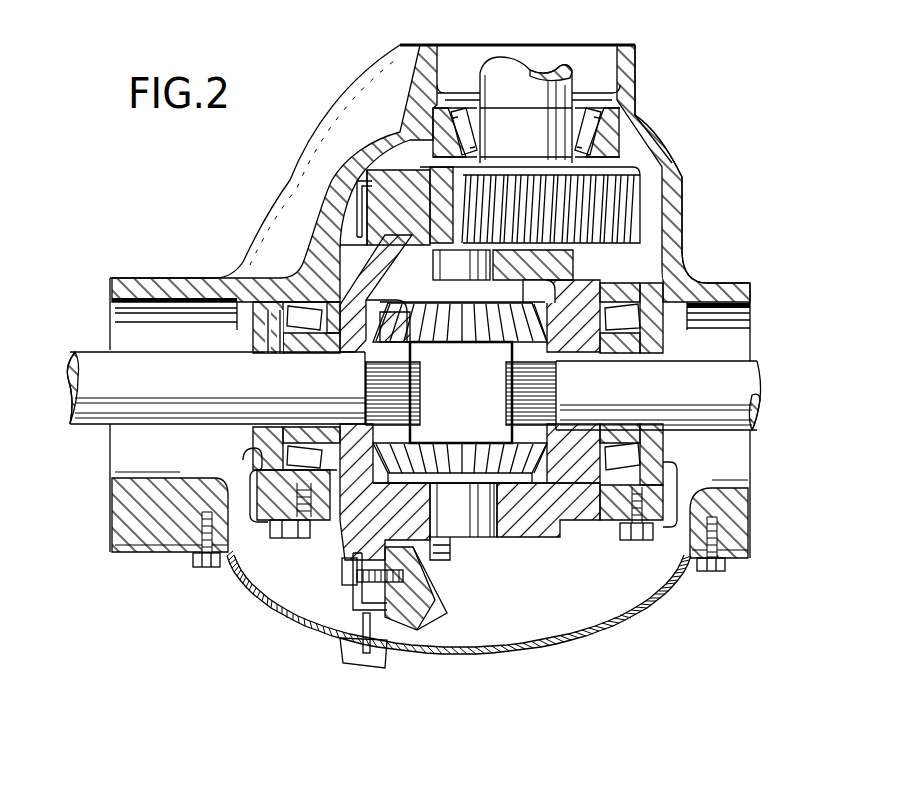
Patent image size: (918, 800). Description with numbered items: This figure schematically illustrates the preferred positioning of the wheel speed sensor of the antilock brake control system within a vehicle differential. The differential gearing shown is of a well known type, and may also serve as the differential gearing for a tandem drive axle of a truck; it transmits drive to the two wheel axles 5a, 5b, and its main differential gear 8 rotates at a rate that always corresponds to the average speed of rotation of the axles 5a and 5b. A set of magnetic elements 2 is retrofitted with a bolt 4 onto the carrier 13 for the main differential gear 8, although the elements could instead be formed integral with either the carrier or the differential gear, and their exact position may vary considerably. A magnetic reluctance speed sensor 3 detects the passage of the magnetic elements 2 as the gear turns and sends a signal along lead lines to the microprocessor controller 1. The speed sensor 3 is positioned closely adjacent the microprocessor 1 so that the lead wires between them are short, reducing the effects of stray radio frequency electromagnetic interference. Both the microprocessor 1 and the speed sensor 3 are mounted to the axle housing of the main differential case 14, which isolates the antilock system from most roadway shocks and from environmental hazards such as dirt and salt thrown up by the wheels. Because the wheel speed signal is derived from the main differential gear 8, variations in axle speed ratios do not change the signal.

The microprocessor controller 1 is at (372, 675).
The magnetic elements 2 is at (353, 213).
The magnetic reluctance speed sensor 3 is at (328, 630).
The bolt 4 is at (341, 576).
The axle 5a is at (745, 372).
The axle 5b is at (75, 350).
The main differential gear 8 is at (433, 598).
The carrier 13 is at (430, 522).
The main differential case 14 is at (510, 652).